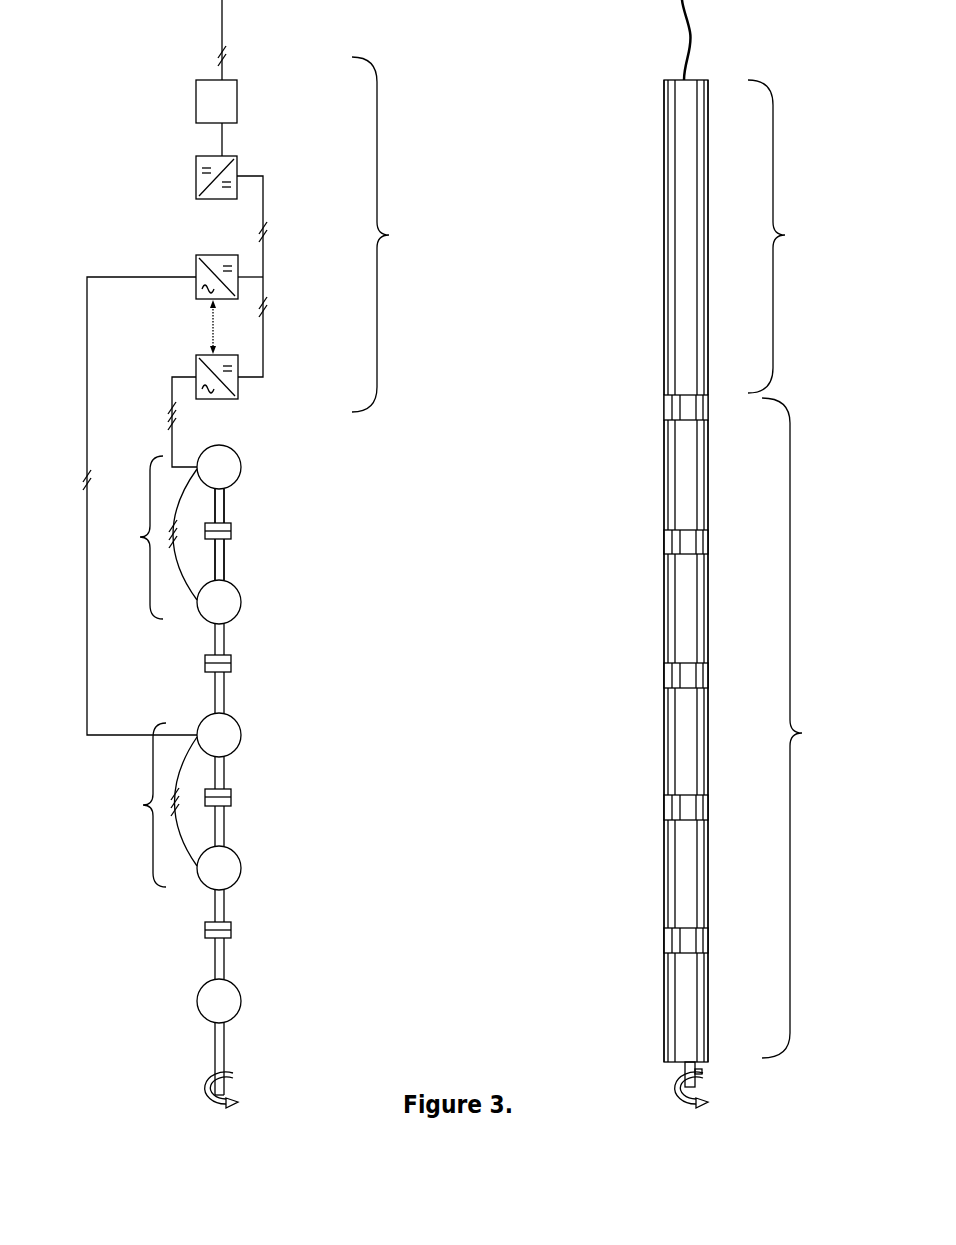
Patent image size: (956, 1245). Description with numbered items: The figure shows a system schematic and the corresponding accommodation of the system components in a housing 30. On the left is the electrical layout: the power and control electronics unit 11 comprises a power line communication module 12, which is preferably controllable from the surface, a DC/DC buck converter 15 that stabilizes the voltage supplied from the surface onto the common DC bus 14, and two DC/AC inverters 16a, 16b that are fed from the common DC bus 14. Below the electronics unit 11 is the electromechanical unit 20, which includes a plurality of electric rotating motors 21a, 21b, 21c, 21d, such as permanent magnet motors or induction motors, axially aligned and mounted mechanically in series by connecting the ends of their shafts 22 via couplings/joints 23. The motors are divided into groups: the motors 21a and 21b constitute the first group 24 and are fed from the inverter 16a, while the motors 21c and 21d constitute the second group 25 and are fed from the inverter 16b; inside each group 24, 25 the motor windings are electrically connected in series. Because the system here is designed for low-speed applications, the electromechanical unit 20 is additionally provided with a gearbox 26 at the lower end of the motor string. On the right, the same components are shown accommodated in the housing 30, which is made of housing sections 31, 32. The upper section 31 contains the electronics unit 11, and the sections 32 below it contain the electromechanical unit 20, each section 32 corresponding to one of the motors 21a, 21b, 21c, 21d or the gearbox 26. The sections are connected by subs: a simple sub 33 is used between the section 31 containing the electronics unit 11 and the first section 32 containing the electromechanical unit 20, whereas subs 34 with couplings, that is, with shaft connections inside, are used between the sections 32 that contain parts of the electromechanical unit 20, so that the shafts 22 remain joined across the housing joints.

The power and control electronics unit 11 is at (586, 234).
The power line communication module 12 is at (213, 105).
The common DC bus 14 is at (278, 265).
The DC/DC buck converter 15 is at (199, 172).
The DC/AC inverter 16a is at (199, 263).
The DC/AC inverter 16b is at (199, 365).
The electromechanical unit 20 is at (800, 728).
The electric rotating motor 21a is at (648, 466).
The electric rotating motor 21b is at (648, 604).
The electric rotating motor 21c is at (648, 737).
The electric rotating motor 21d is at (648, 866).
The shaft 22 is at (224, 503).
The coupling/joint 23 is at (231, 530).
The first group 24 is at (152, 537).
The second group 25 is at (156, 805).
The gearbox 26 is at (648, 1001).
The housing 30 is at (652, 236).
The housing section 31 is at (690, 290).
The housing section 32 is at (690, 465).
The simple sub 33 is at (675, 404).
The sub with coupling 34 is at (680, 545).